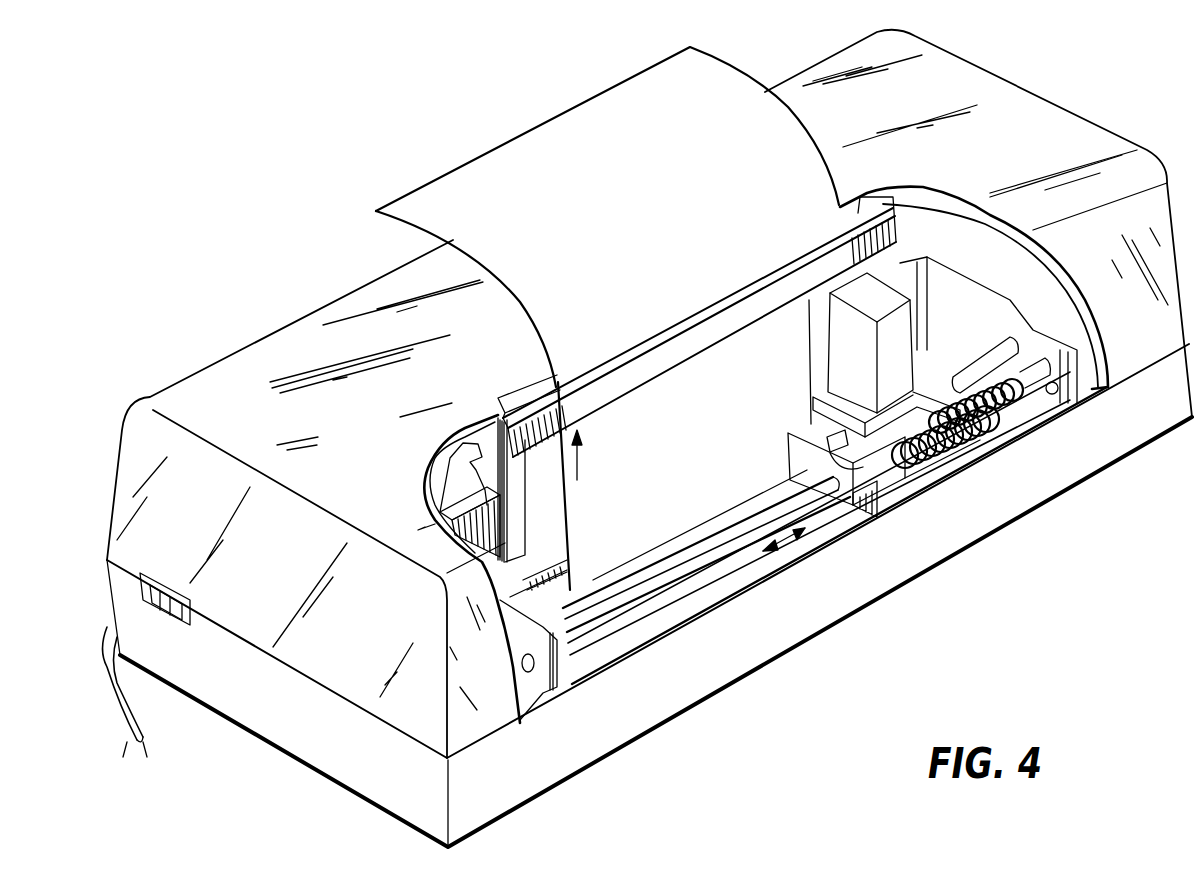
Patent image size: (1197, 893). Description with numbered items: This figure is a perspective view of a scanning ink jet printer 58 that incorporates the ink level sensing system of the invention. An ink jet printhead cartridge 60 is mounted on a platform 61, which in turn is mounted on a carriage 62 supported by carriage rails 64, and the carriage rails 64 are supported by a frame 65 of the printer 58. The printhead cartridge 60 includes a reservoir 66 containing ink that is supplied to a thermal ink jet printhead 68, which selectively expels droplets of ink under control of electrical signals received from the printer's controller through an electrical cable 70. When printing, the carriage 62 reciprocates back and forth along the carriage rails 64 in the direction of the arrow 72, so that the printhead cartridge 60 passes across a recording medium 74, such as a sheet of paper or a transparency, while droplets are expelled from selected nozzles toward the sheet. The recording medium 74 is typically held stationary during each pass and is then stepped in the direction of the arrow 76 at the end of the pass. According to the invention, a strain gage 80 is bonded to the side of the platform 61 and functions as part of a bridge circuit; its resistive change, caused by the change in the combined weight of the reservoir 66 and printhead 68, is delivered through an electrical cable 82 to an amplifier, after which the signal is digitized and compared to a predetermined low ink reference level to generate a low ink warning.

The ink jet printer 58 is at (1044, 66).
The ink jet printhead cartridge 60 is at (835, 262).
The platform 61 is at (880, 450).
The carriage 62 is at (890, 490).
The carriage rails 64 is at (737, 547).
The frame 65 is at (1000, 327).
The reservoir 66 is at (967, 425).
The thermal ink jet printhead 68 is at (824, 372).
The electrical cable 70 is at (975, 392).
The arrow 72 is at (800, 540).
The recording medium 74 is at (457, 190).
The arrow 76 is at (583, 455).
The strain gage 80 is at (800, 438).
The electrical cable 82 is at (995, 415).